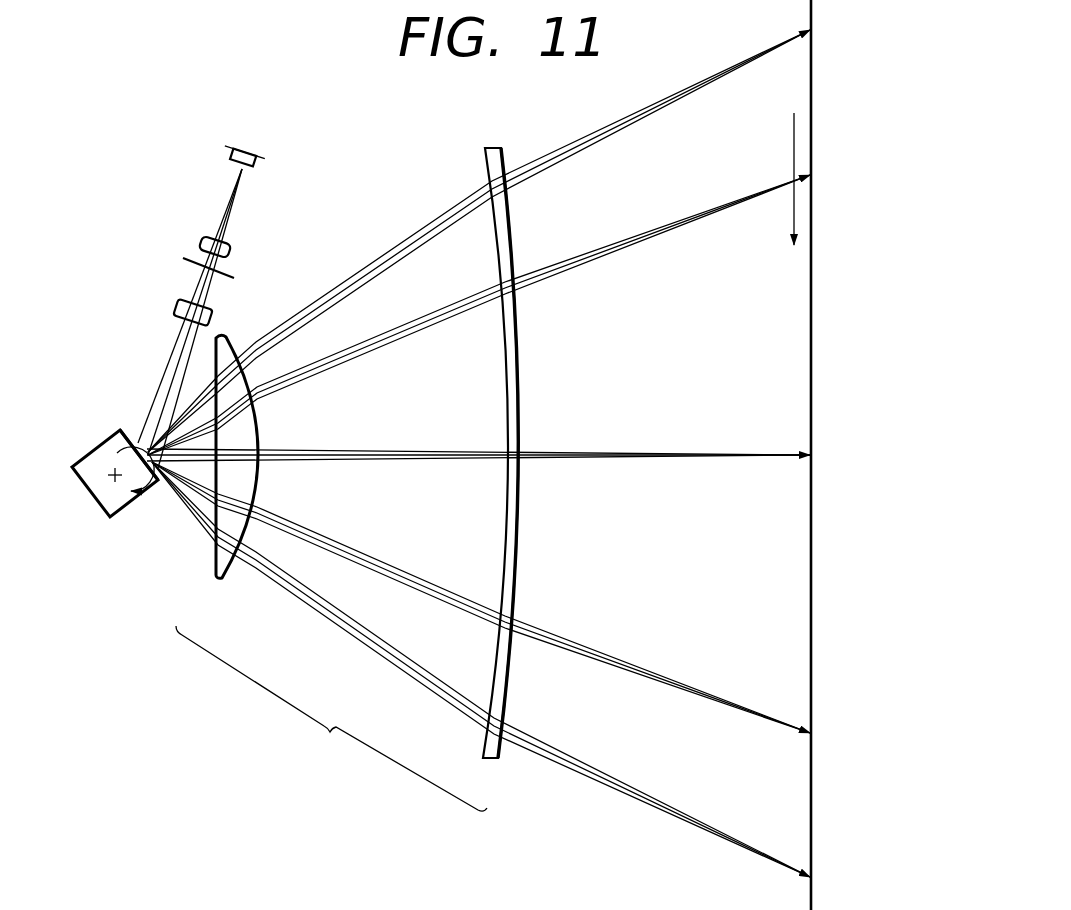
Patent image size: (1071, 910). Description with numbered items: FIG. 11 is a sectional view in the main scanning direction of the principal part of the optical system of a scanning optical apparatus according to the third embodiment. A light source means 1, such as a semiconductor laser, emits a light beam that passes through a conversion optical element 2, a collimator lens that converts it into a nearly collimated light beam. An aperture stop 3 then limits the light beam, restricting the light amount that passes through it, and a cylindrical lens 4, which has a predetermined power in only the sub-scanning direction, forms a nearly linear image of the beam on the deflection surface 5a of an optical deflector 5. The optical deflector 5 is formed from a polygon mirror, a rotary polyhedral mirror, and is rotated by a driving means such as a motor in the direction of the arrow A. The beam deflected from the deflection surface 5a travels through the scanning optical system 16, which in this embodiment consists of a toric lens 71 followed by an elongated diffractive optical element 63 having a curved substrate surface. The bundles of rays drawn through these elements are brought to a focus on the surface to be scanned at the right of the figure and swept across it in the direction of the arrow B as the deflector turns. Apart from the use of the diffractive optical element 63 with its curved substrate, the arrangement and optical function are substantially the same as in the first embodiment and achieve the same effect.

The light source means 1 is at (231, 155).
The conversion optical element 2 is at (204, 242).
The aperture stop 3 is at (186, 262).
The cylindrical lens 4 is at (181, 312).
The optical deflector 5 is at (107, 514).
The deflection surface 5a is at (118, 428).
The toric lens 71 is at (218, 580).
The diffractive optical element 63 is at (486, 742).
The scanning optical system 16 is at (331, 718).
The rotation direction arrow A is at (136, 486).
The scanning direction arrow B is at (793, 146).